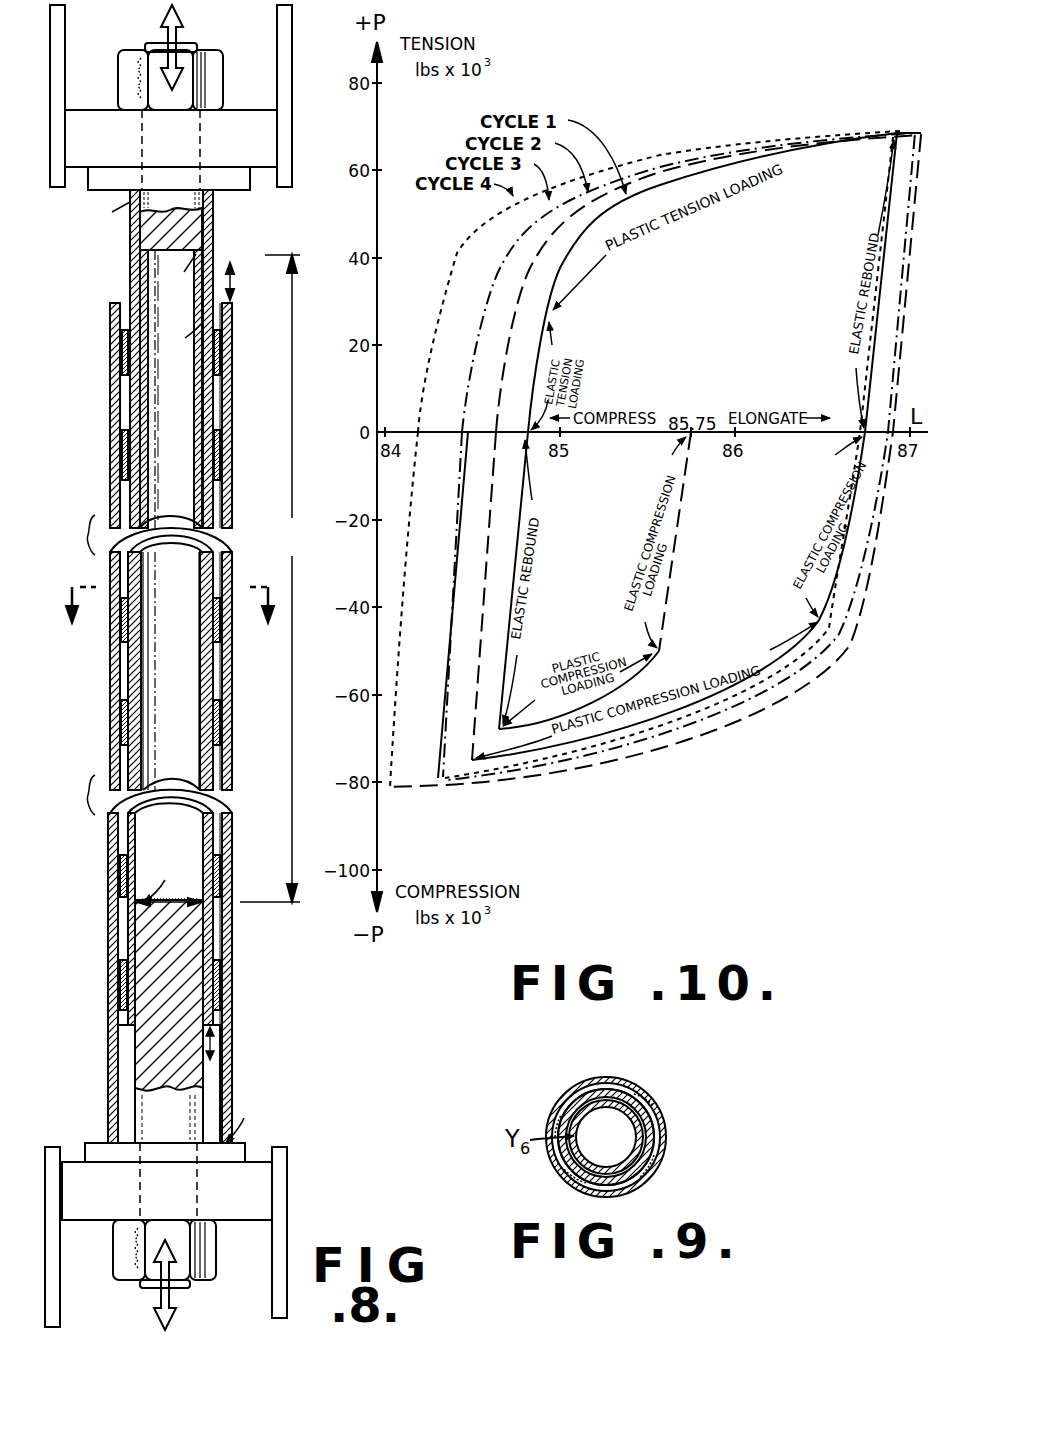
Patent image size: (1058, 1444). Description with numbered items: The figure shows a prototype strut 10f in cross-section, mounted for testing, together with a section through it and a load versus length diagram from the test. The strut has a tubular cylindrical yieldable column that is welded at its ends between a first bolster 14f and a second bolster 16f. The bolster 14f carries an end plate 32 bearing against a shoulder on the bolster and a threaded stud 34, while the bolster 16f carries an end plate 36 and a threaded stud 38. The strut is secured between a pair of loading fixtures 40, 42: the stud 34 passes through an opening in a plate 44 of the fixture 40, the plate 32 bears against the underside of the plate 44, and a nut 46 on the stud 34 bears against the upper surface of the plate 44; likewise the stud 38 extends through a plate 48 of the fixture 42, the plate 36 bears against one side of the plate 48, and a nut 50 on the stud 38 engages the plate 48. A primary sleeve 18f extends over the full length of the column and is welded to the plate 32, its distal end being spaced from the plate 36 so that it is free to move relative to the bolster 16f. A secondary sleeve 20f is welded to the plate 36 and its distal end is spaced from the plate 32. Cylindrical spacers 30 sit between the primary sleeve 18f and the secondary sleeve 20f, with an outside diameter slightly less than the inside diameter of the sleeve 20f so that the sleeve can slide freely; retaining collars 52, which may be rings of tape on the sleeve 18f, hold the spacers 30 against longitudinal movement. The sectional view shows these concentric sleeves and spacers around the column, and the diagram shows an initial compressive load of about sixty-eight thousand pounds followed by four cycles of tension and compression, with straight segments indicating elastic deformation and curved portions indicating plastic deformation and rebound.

In FIG. 8, the prototype strut 10f is at (78, 316).
In FIG. 8, the bolster 14f is at (146, 228).
In FIG. 8, the bolster 16f is at (198, 1078).
In FIG. 8, the primary sleeve 18f is at (213, 242).
In FIG. 9, the primary sleeve 18f is at (648, 1158).
In FIG. 8, the secondary sleeve 20f is at (224, 346).
In FIG. 9, the secondary sleeve 20f is at (650, 1125).
In FIG. 8, the cylindrical spacers 30 is at (231, 406).
In FIG. 9, the cylindrical spacers 30 is at (580, 1082).
In FIG. 8, the end plate 32 is at (246, 188).
In FIG. 8, the threaded stud 34 is at (180, 46).
In FIG. 8, the end plate 36 is at (90, 1143).
In FIG. 8, the threaded stud 38 is at (146, 1288).
In FIG. 8, the loading fixture 40 is at (193, 113).
In FIG. 8, the loading fixture 42 is at (201, 1235).
In FIG. 8, the plate 44 is at (240, 114).
In FIG. 8, the nut 46 is at (120, 80).
In FIG. 8, the plate 48 is at (248, 1222).
In FIG. 8, the nut 50 is at (114, 1262).
In FIG. 8, the retaining collars 52 is at (122, 352).
In FIG. 9, the retaining collars 52 is at (625, 1095).